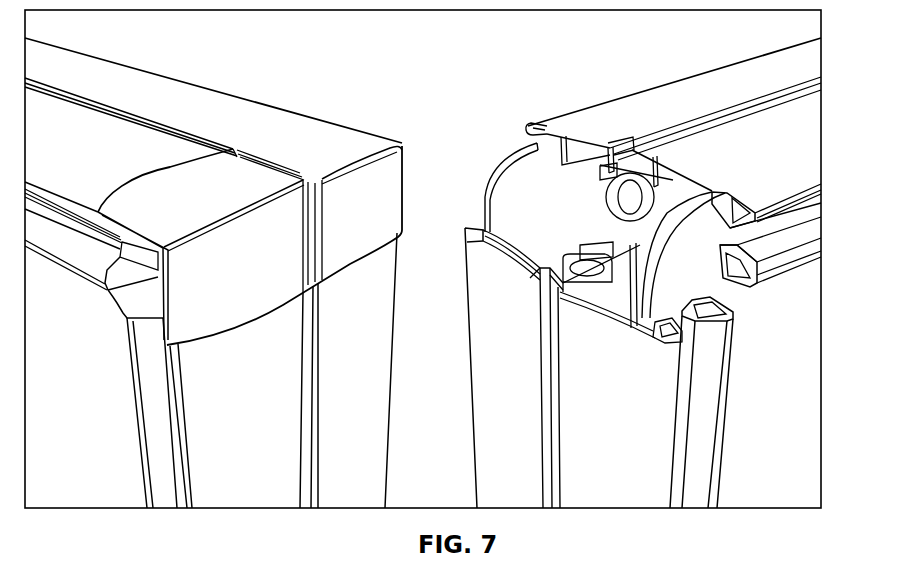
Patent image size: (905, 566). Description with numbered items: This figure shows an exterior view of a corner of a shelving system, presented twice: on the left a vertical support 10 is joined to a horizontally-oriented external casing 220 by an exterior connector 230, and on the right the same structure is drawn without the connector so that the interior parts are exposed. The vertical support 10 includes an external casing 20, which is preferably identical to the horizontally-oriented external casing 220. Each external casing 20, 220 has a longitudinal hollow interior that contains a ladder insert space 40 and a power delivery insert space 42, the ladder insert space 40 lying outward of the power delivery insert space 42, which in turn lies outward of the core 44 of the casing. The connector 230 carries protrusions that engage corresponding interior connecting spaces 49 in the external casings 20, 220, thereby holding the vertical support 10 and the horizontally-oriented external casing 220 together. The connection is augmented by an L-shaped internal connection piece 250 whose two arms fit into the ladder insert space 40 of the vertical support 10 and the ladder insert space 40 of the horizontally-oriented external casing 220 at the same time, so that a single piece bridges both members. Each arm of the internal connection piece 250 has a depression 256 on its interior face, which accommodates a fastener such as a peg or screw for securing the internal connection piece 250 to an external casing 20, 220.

The vertical support 10 is at (138, 443).
The external casing 20 is at (470, 230).
The ladder insert space 40 is at (475, 250).
The power delivery insert space 42 is at (497, 272).
The core 44 is at (668, 200).
The interior connecting space 49 is at (735, 268).
The horizontally-oriented external casing 220 is at (200, 87).
The connector 230 is at (358, 145).
The internal connection piece 250 is at (497, 167).
The depression 256 is at (762, 216).